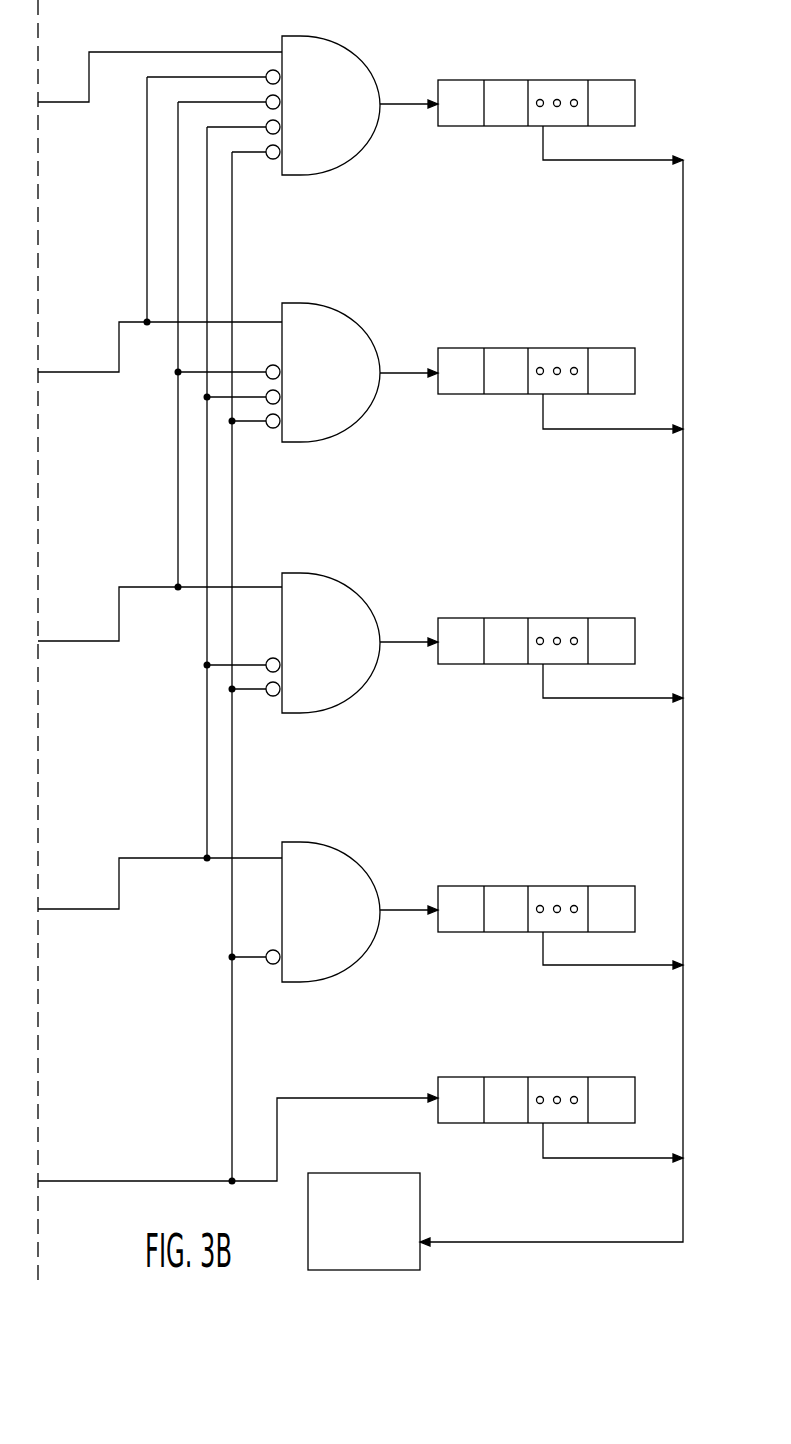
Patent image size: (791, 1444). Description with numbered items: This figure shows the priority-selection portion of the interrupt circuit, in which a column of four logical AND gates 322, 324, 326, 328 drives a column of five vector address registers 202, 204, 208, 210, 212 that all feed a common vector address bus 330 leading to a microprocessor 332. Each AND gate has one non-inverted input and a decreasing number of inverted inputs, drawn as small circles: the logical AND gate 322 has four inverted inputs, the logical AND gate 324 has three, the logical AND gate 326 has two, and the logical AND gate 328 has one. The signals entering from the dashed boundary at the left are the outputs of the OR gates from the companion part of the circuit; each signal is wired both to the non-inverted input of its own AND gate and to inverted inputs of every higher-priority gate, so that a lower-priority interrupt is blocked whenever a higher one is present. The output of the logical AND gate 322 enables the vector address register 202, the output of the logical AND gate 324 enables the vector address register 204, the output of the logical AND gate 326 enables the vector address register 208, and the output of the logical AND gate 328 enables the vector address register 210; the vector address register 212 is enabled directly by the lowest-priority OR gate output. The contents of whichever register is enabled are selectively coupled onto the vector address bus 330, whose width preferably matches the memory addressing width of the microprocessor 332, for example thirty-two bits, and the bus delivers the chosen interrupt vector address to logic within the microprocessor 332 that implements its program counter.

The logical AND gate 322 is at (337, 44).
The logical AND gate 324 is at (337, 312).
The logical AND gate 326 is at (337, 582).
The logical AND gate 328 is at (337, 851).
The vector address register 202 is at (460, 126).
The vector address register 204 is at (460, 394).
The vector address register 208 is at (460, 664).
The vector address register 210 is at (460, 932).
The vector address register 212 is at (460, 1123).
The vector address bus 330 is at (683, 508).
The microprocessor 332 is at (400, 1213).